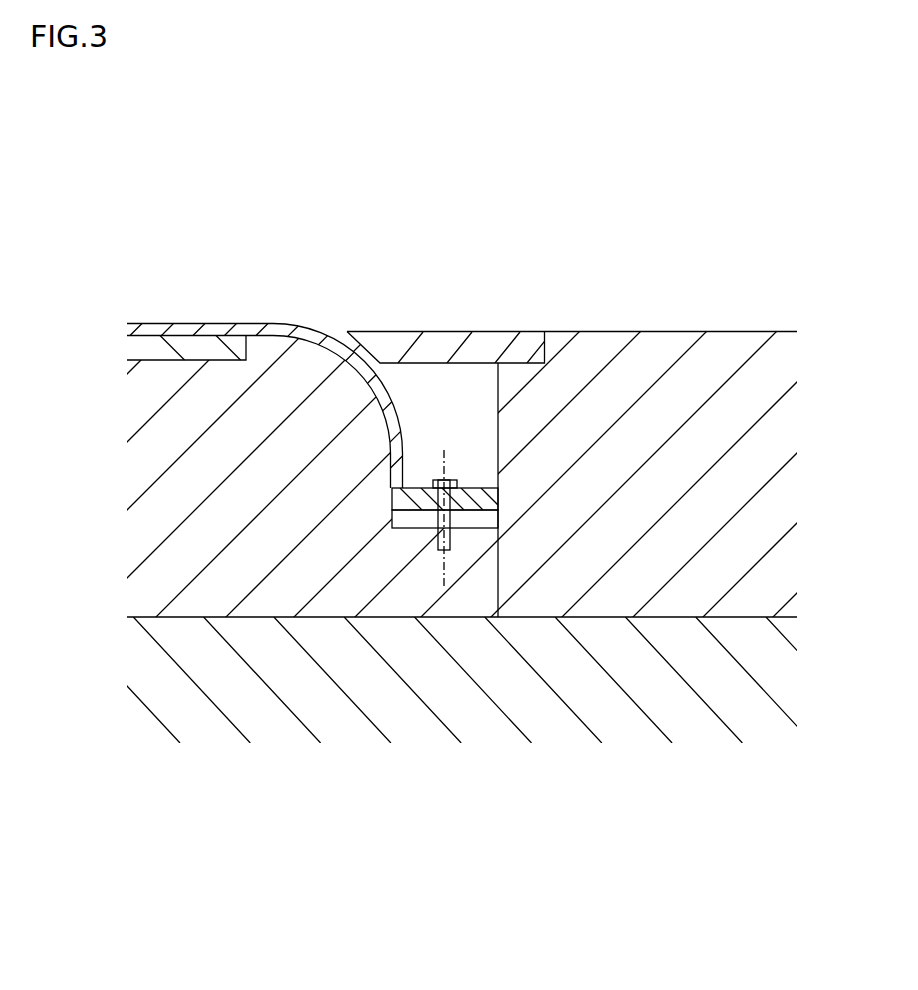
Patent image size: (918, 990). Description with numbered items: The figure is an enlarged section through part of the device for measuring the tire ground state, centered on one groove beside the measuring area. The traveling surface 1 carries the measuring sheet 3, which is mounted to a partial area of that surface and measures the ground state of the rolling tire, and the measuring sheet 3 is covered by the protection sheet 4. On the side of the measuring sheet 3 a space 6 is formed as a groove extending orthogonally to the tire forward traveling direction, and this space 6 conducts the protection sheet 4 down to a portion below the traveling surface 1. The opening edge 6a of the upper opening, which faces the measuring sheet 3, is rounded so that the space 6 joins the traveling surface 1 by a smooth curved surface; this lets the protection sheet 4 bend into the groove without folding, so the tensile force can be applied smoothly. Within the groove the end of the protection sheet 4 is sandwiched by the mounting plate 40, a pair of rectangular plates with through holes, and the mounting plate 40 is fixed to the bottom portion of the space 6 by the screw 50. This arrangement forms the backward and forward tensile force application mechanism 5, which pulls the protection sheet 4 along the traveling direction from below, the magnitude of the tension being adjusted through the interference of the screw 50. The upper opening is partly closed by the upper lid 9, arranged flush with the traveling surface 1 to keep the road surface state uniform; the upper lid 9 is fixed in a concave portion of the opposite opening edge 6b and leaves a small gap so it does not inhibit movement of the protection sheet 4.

The traveling surface 1 is at (737, 331).
The measuring sheet 3 is at (200, 345).
The protection sheet 4 is at (285, 328).
The backward and forward tensile force application mechanism 5 is at (458, 512).
The space 6 is at (437, 421).
The opening edge 6a is at (378, 365).
The opening edge 6b is at (490, 363).
The upper lid 9 is at (460, 331).
The mounting plate 40 is at (478, 487).
The screw 50 is at (445, 483).